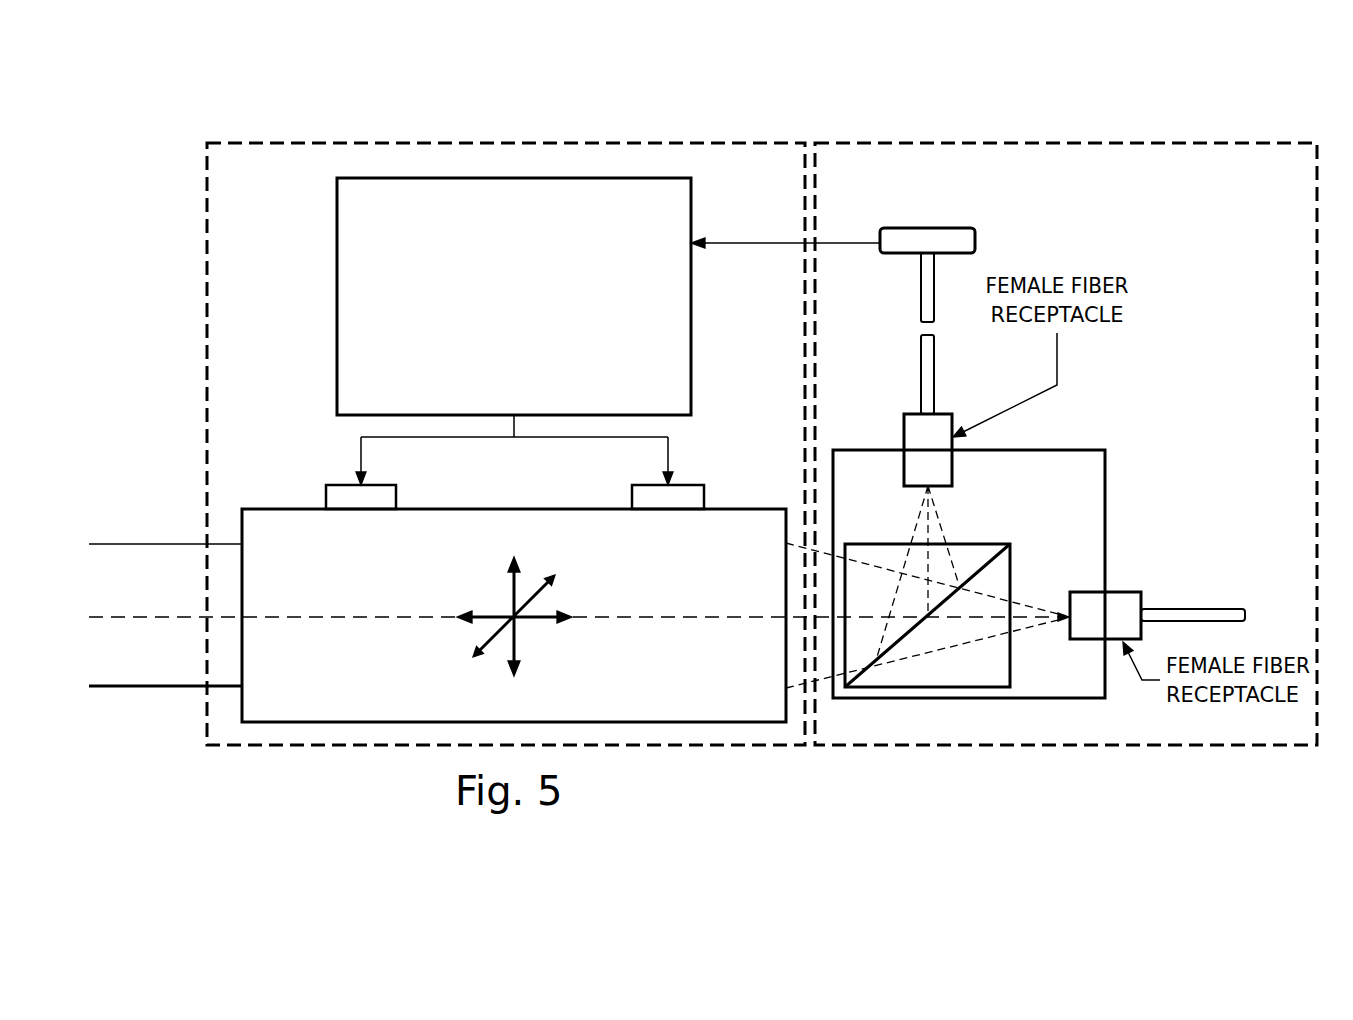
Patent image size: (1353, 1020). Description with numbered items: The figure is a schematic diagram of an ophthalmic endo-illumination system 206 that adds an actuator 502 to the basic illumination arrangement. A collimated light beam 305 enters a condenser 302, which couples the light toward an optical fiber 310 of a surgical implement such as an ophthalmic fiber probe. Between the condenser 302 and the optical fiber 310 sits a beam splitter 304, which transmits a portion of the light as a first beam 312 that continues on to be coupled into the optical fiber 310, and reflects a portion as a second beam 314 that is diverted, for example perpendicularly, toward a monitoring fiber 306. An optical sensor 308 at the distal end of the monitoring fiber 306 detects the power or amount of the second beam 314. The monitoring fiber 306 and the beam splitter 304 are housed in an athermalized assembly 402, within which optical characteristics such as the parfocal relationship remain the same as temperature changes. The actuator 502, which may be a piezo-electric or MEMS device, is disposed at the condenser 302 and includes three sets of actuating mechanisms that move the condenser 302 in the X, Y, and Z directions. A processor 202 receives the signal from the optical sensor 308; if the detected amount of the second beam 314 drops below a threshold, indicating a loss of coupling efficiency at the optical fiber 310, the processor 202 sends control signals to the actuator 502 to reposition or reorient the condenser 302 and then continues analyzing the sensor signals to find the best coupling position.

The ophthalmic endo-illumination system 206 is at (497, 95).
The processor 202 is at (537, 312).
The condenser 302 is at (512, 508).
The actuator 502 is at (333, 496).
The light beam 305 is at (148, 692).
The optical sensor 308 is at (930, 228).
The monitoring fiber 306 is at (937, 375).
The athermalized assembly 402 is at (1066, 445).
The second beam 314 is at (938, 513).
The first beam 312 is at (1042, 605).
The beam splitter 304 is at (1012, 662).
The optical fiber 310 is at (1192, 609).